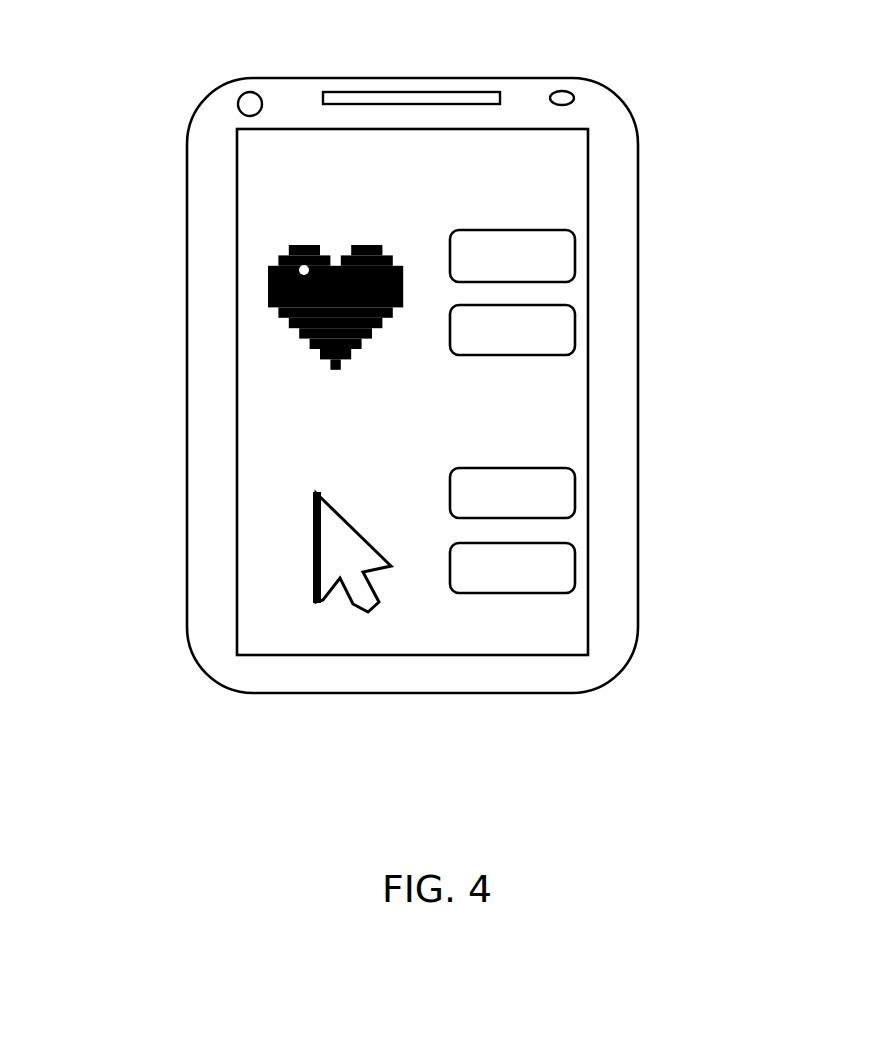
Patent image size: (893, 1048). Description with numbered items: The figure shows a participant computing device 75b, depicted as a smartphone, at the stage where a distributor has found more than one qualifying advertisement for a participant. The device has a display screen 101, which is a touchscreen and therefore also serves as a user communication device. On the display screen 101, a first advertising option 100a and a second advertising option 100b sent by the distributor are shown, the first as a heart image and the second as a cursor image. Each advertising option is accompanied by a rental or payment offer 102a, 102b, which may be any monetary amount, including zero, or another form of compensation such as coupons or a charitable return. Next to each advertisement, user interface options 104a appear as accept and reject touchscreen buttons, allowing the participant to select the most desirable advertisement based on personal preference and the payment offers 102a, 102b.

The participant computing device 75b is at (650, 115).
The display screen 101 is at (590, 203).
The payment offer 102a is at (273, 168).
The first advertising option 100a is at (250, 280).
The payment offer 102b is at (262, 448).
The second advertising option 100b is at (287, 555).
The user interface option 104a is at (608, 411).